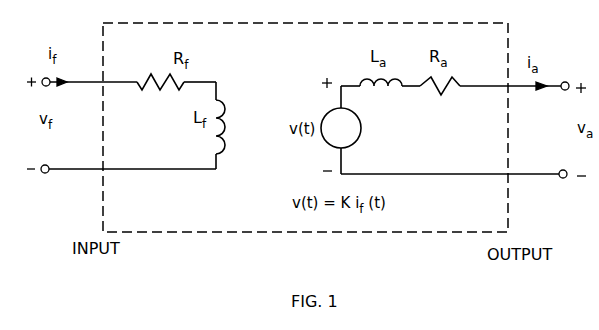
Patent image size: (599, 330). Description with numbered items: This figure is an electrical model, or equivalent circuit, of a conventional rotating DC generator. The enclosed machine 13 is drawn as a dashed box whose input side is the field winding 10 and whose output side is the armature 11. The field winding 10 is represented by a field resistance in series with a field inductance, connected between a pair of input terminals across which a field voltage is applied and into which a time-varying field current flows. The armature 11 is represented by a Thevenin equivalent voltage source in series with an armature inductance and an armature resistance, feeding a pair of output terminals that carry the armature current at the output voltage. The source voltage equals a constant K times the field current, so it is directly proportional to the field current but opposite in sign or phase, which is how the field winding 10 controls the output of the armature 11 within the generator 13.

The field winding 10 is at (165, 137).
The armature 11 is at (440, 141).
The rotating machine (generator) 13 is at (189, 212).